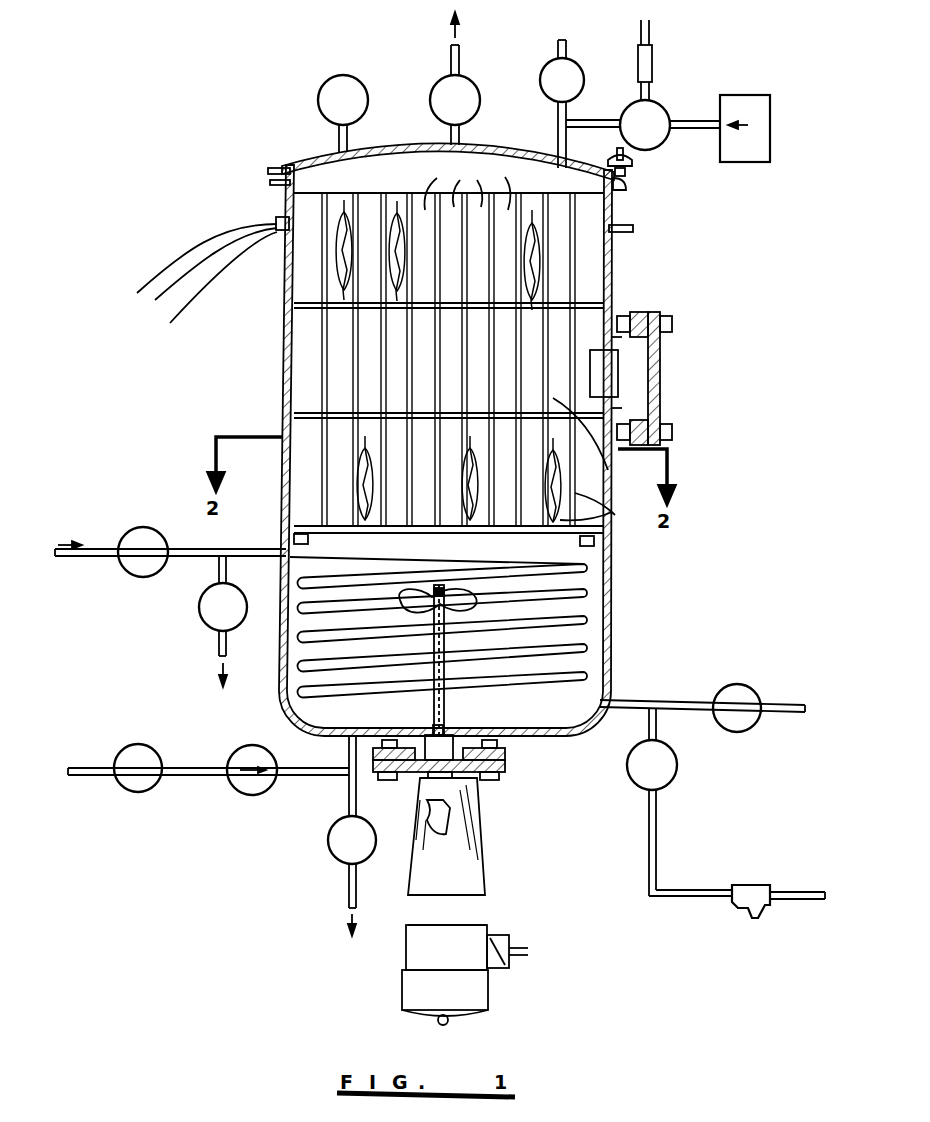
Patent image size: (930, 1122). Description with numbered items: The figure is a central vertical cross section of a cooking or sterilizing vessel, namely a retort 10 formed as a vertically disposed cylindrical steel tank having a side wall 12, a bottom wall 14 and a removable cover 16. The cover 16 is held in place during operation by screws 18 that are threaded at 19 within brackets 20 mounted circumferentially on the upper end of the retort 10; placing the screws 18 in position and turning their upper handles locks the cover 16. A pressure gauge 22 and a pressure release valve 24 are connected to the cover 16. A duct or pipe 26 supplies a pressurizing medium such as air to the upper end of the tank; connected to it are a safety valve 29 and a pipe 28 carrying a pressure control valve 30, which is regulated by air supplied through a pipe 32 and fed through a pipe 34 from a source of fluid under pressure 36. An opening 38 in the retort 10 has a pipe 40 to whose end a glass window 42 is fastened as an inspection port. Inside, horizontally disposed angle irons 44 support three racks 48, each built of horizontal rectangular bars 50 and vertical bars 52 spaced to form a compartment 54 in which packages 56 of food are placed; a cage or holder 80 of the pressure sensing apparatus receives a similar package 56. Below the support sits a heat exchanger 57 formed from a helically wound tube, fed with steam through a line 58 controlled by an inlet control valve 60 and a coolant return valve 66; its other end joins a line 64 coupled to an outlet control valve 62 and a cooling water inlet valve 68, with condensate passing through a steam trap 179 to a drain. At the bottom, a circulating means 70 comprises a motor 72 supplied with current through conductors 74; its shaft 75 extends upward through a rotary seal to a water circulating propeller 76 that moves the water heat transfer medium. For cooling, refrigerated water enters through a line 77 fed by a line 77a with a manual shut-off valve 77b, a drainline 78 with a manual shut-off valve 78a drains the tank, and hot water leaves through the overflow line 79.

The retort 10 is at (286, 292).
The side wall 12 is at (288, 382).
The bottom wall 14 is at (496, 738).
The removable cover 16 is at (330, 156).
The screws 18 is at (634, 162).
The threads 19 is at (626, 182).
The brackets 20 is at (618, 192).
The pressure gauge 22 is at (355, 80).
The pressure release valve 24 is at (466, 80).
The duct or pipe 26 is at (558, 130).
The pipe 28 is at (580, 120).
The safety valve 29 is at (573, 68).
The pressure control valve 30 is at (655, 100).
The pipe 32 is at (642, 18).
The pipe 34 is at (706, 130).
The source of fluid under pressure 36 is at (735, 95).
The opening 38 is at (612, 404).
The pipe 40 is at (628, 337).
The glass window 42 is at (660, 378).
The horizontally disposed angle irons 44 is at (290, 552).
The supporting racks 48 is at (325, 262).
The rectangular bars 50 is at (425, 305).
The vertically disposed bars 52 is at (404, 371).
The compartment 54 is at (500, 182).
The packages 56 is at (527, 251).
The heat exchanger 57 is at (588, 596).
The line 58 is at (181, 549).
The inlet control valve 60 is at (136, 534).
The outlet control valve 62 is at (663, 752).
The line 64 is at (606, 702).
The coolant return valve 66 is at (206, 601).
The cooling water inlet valve 68 is at (731, 690).
The circulating means 70 is at (400, 928).
The motor 72 is at (410, 985).
The conductors 74 is at (522, 950).
The shaft 75 is at (446, 724).
The water circulating propeller 76 is at (420, 595).
The line 77 is at (349, 746).
The line 77a is at (177, 772).
The manual shut-off valve 77b is at (140, 752).
The drainline 78 is at (349, 802).
The manual shut-off valve 78a is at (334, 836).
The overflow line 79 is at (625, 232).
The cage or holder 80 is at (590, 372).
The steam trap 179 is at (753, 884).